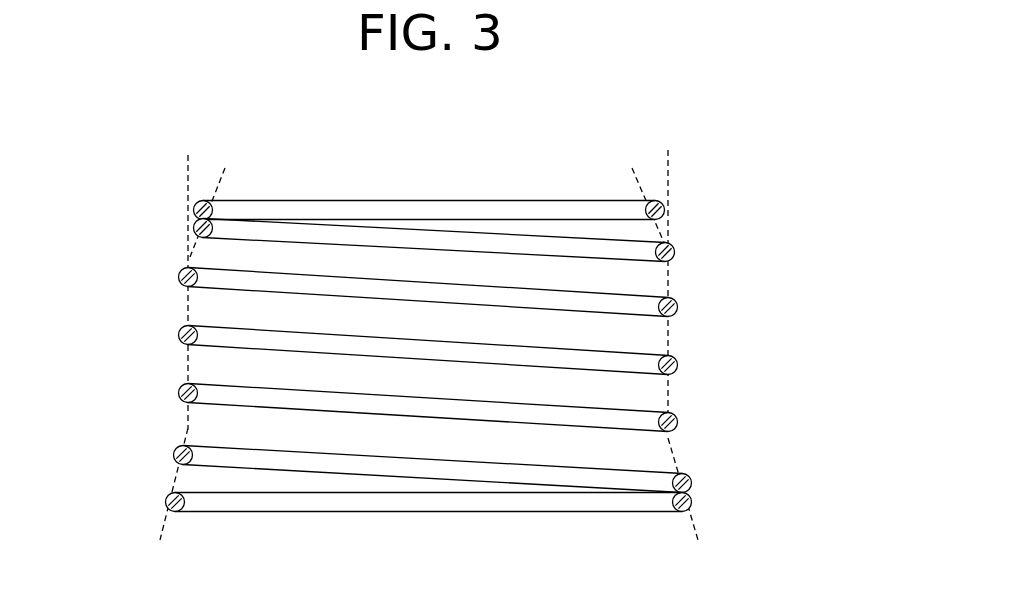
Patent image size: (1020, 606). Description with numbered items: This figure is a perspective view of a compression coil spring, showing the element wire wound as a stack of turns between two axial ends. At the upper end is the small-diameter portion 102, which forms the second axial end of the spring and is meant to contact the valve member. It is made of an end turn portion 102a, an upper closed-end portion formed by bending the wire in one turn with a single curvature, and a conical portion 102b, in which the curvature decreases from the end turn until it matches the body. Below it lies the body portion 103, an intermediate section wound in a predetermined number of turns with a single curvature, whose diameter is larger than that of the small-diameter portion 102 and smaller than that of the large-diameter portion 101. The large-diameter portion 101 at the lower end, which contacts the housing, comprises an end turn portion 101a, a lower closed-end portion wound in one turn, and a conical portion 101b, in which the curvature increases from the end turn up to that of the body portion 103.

The large-diameter portion 101 is at (500, 524).
The end turn portion 101a is at (340, 511).
The conical portion 101b is at (410, 472).
The small-diameter portion 102 is at (514, 183).
The end turn portion 102a is at (405, 200).
The conical portion 102b is at (550, 243).
The body portion 103 is at (752, 268).